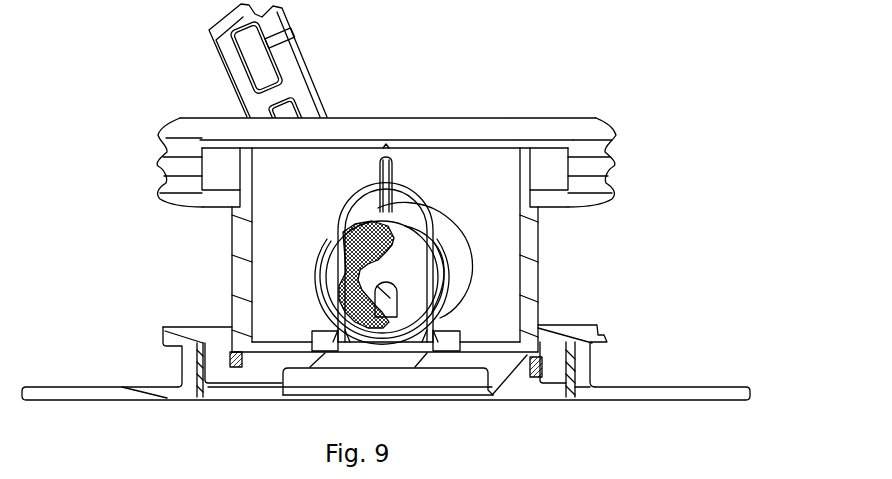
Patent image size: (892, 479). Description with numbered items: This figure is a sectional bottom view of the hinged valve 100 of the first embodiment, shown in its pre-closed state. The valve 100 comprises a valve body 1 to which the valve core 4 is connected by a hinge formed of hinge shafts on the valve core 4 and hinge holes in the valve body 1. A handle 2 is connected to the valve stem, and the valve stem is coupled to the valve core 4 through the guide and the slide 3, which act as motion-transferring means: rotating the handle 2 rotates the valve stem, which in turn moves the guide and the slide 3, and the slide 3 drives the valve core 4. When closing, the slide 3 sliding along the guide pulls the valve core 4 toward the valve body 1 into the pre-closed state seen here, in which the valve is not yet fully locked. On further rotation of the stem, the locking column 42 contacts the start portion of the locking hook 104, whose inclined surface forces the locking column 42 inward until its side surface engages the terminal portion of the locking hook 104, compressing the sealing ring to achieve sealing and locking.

The hinged valve 100 is at (112, 58).
The valve body 1 is at (600, 336).
The handle 2 is at (300, 50).
The slide 3 is at (378, 208).
The valve core 4 is at (523, 388).
The locking column 42 is at (390, 298).
The locking hook 104 is at (343, 277).